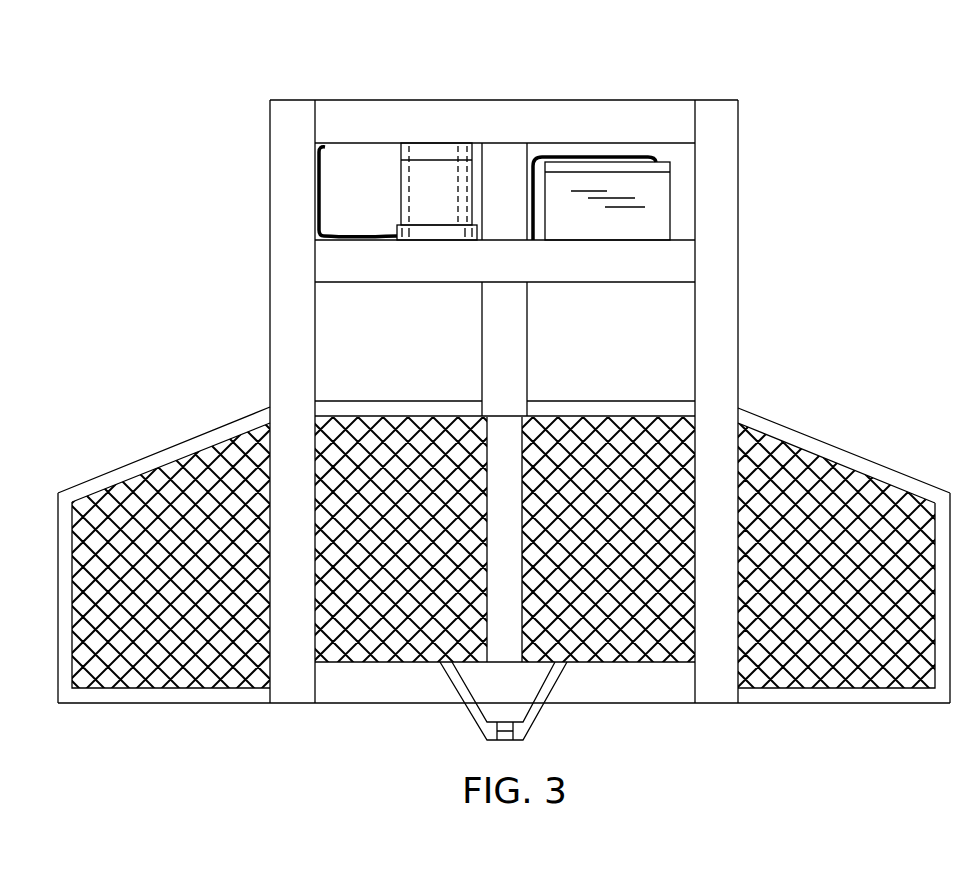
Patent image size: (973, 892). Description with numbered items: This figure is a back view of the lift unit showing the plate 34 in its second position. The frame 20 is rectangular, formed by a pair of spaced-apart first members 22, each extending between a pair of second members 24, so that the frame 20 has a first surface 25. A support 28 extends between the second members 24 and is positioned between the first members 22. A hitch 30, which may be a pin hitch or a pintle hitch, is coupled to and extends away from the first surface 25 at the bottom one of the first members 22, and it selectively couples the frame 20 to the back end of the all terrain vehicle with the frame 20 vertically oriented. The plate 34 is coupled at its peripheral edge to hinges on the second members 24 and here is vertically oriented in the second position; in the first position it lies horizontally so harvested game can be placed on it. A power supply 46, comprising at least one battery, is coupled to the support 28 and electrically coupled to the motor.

The frame 20 is at (270, 99).
The first members 22 is at (418, 98).
The second members 24 is at (270, 322).
The first surface 25 is at (632, 116).
The support 28 is at (316, 218).
The hitch 30 is at (530, 717).
The plate 34 is at (925, 703).
The power supply 46 is at (592, 158).